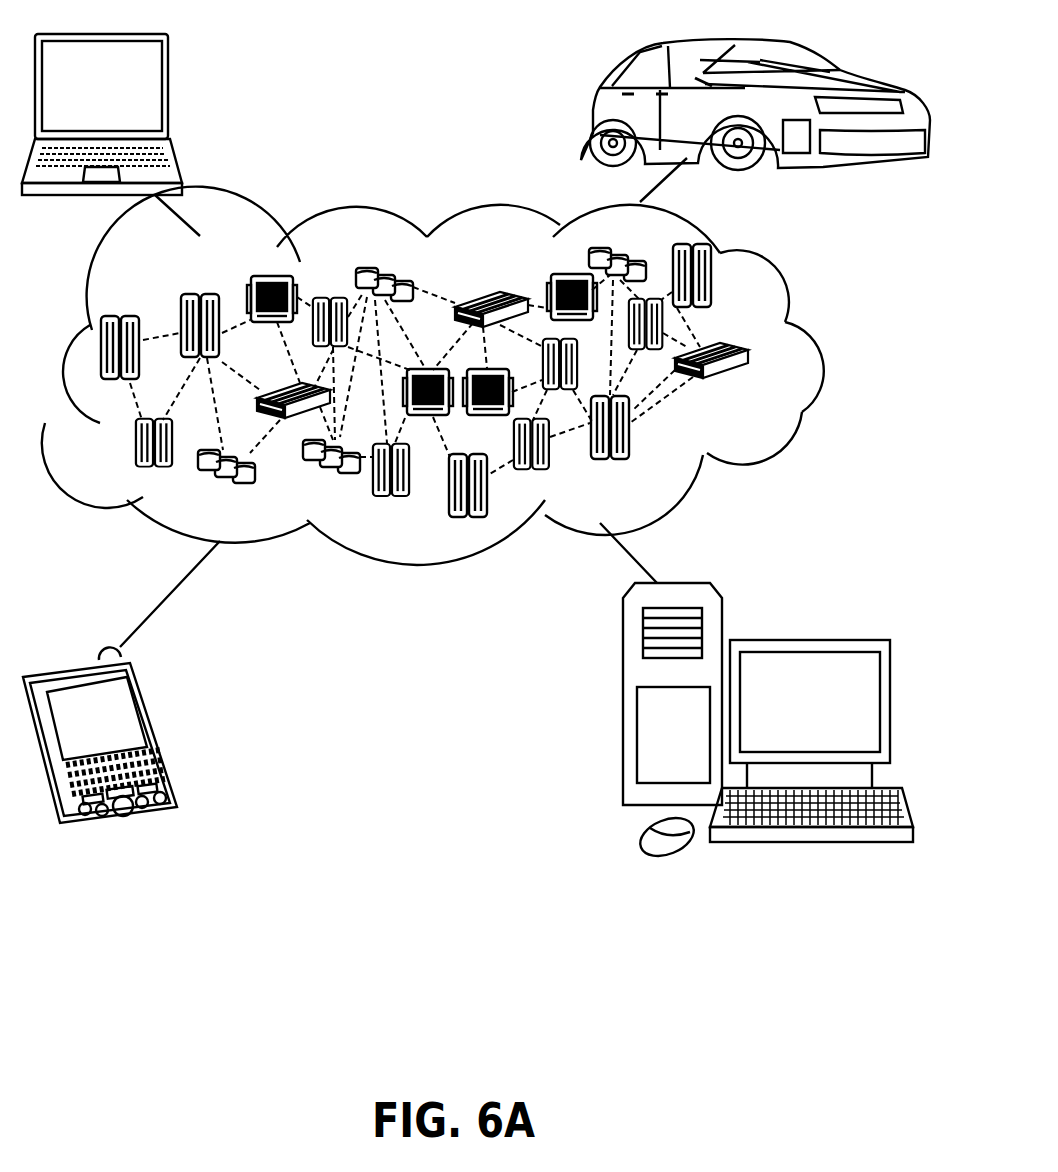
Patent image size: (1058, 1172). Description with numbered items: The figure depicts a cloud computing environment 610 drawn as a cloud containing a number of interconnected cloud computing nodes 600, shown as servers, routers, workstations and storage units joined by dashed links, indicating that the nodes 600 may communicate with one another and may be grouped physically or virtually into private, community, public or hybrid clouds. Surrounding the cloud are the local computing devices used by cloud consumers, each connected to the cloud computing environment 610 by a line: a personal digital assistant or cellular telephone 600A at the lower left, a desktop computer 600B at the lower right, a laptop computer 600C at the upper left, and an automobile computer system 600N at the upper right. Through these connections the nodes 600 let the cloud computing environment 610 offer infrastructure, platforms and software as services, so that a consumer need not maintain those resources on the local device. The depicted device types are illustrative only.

The cloud computing nodes 600 is at (479, 380).
The cloud computing environment 610 is at (808, 360).
The personal digital assistant (PDA) or cellular telephone 600A is at (160, 730).
The desktop computer 600B is at (807, 640).
The laptop computer 600C is at (170, 92).
The automobile computer system 600N is at (593, 108).